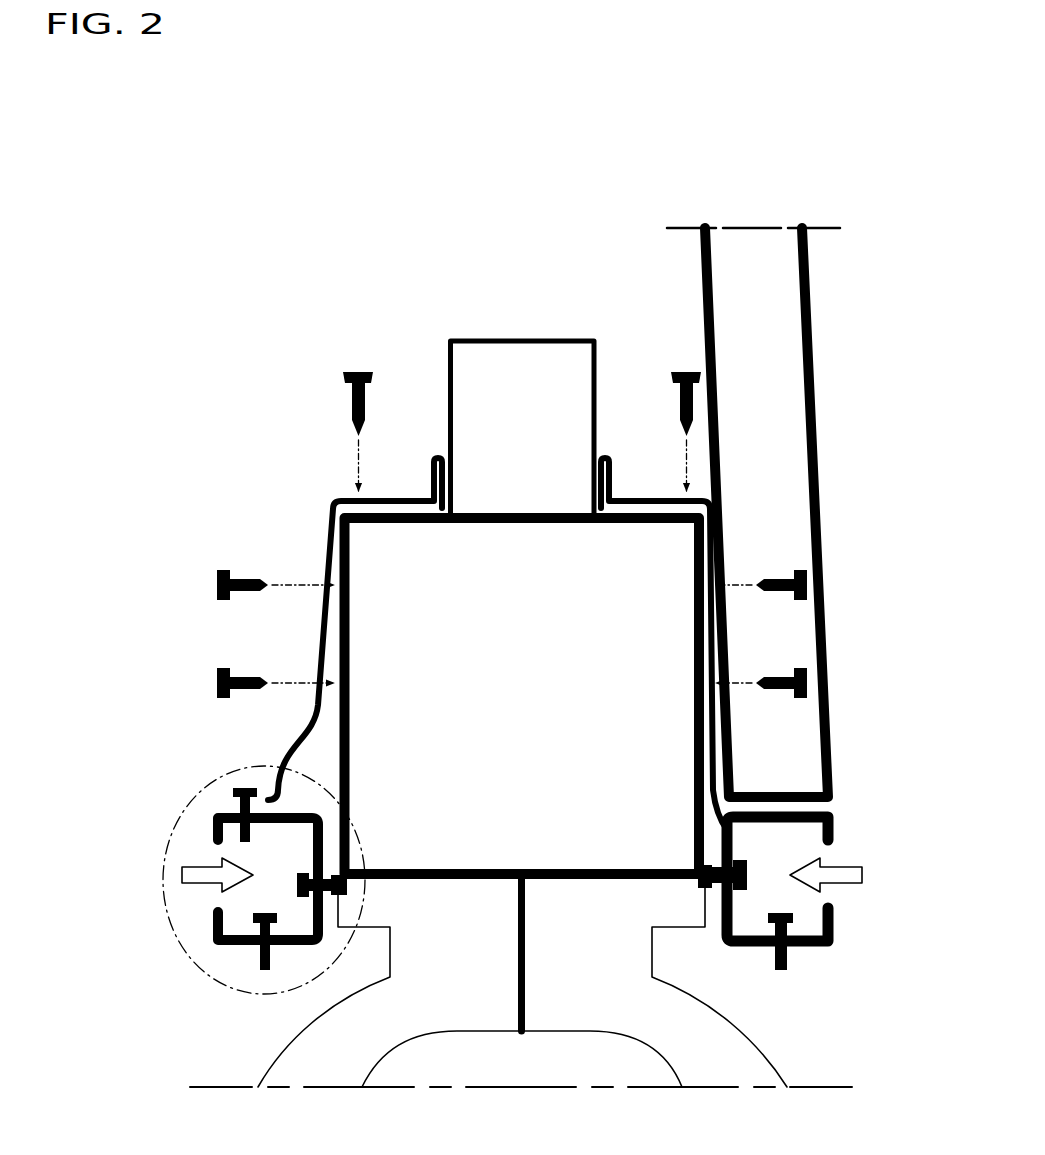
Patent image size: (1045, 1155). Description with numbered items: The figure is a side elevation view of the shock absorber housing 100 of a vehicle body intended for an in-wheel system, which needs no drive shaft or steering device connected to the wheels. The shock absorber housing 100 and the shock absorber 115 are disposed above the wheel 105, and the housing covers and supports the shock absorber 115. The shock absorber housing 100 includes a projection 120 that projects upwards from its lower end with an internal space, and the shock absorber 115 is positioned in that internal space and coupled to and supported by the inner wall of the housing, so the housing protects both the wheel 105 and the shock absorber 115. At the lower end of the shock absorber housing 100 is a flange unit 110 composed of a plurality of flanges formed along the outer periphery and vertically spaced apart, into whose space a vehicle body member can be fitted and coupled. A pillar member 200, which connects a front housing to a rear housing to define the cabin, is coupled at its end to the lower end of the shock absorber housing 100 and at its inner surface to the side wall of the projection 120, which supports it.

The shock absorber housing 100 is at (322, 492).
The wheel 105 is at (548, 1077).
The flange unit 110 is at (165, 850).
The shock absorber 115 is at (545, 709).
The projection 120 is at (320, 640).
The pillar member 200 is at (778, 440).